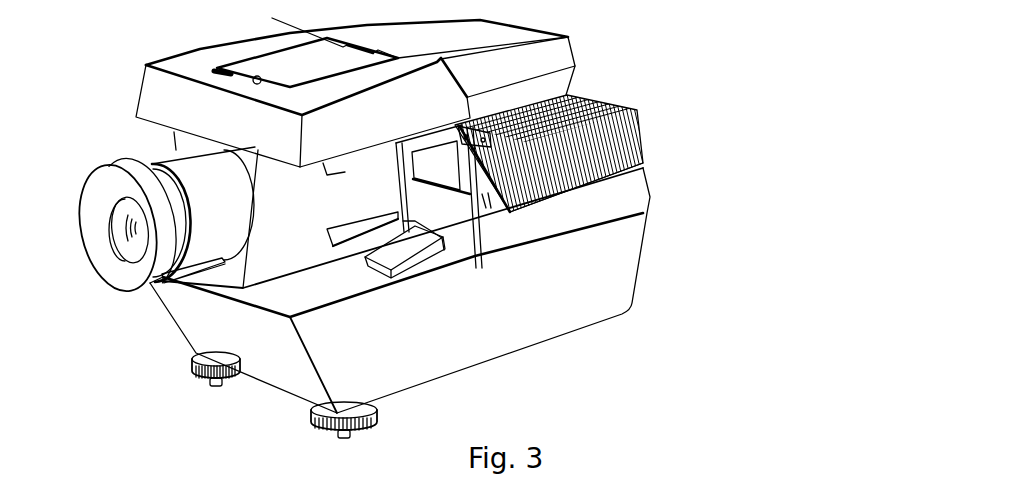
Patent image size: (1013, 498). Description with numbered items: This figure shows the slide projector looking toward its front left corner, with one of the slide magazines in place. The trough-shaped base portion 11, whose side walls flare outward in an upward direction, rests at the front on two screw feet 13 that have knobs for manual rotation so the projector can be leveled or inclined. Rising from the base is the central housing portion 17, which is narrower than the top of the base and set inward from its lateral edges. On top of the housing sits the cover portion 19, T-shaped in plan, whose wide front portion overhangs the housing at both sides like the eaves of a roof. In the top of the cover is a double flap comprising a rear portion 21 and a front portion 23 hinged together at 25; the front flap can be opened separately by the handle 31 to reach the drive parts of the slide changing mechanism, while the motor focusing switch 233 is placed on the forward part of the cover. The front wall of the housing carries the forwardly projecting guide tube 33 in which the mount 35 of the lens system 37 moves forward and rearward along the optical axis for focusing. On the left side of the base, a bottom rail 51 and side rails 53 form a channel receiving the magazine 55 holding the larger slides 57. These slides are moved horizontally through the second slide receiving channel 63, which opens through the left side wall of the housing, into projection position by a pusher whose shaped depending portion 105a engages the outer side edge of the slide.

The base portion 11 is at (630, 276).
The screw feet 13 is at (307, 412).
The central housing portion 17 is at (280, 274).
The cover portion 19 is at (167, 65).
The rear flap portion 21 is at (437, 32).
The front flap portion 23 is at (290, 53).
The hinge 25 is at (358, 43).
The handle 31 is at (260, 77).
The motor focusing switch 233 is at (213, 70).
The guide tube 33 is at (172, 160).
The lens mount 35 is at (132, 165).
The lens system 37 is at (127, 245).
The bottom rail 51 is at (413, 247).
The side rails 53 is at (343, 172).
The magazine 55 is at (571, 226).
The slides 57 is at (592, 107).
The second slide receiving channel 63 is at (398, 180).
The slide pusher depending portion 105a is at (488, 200).